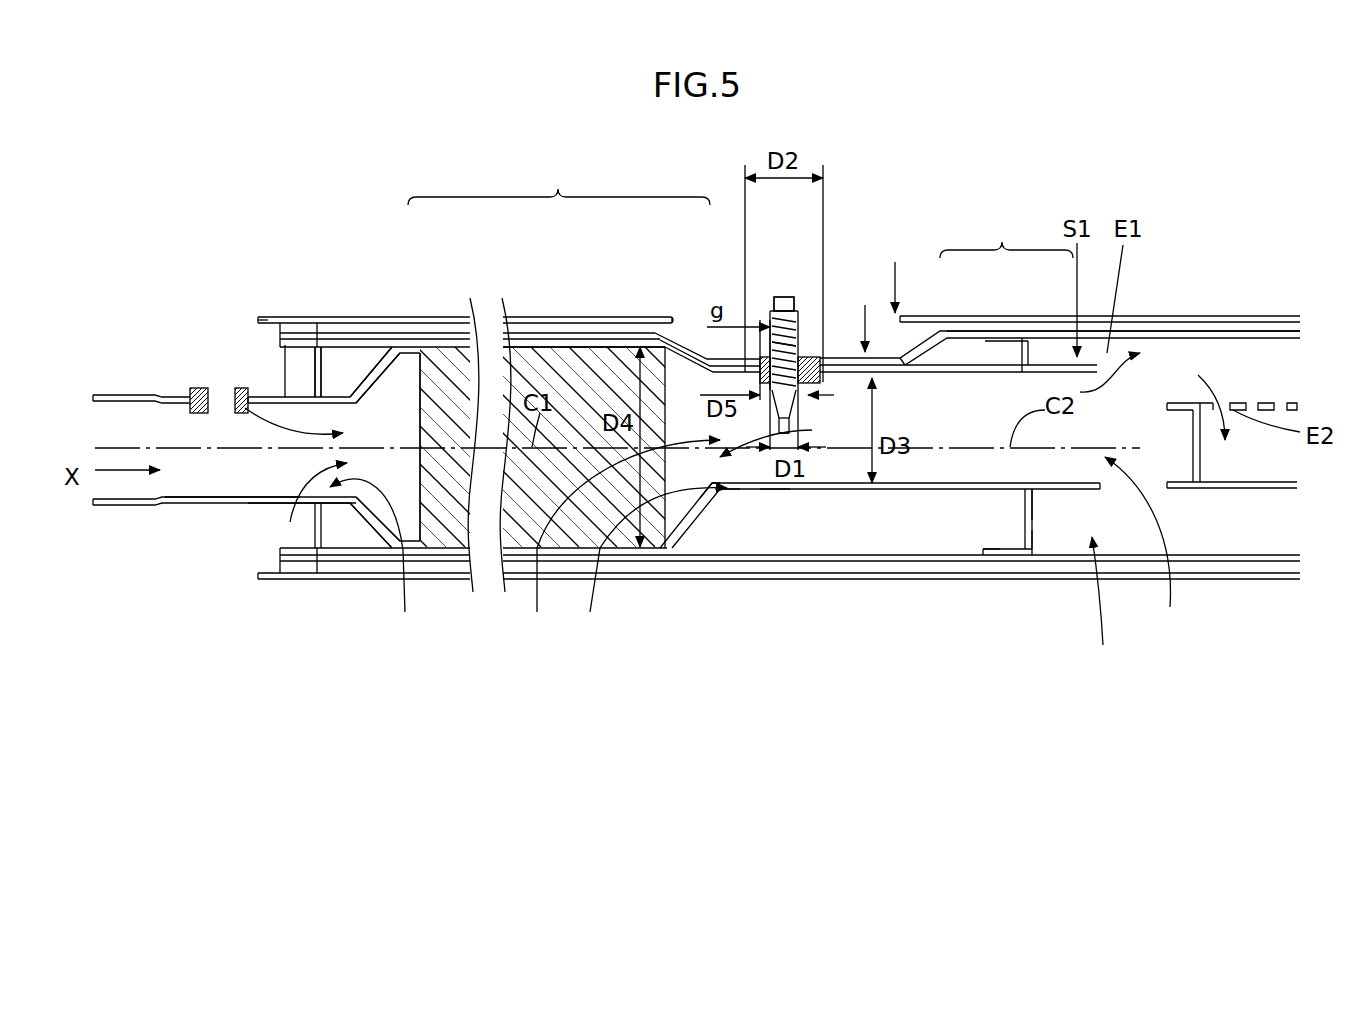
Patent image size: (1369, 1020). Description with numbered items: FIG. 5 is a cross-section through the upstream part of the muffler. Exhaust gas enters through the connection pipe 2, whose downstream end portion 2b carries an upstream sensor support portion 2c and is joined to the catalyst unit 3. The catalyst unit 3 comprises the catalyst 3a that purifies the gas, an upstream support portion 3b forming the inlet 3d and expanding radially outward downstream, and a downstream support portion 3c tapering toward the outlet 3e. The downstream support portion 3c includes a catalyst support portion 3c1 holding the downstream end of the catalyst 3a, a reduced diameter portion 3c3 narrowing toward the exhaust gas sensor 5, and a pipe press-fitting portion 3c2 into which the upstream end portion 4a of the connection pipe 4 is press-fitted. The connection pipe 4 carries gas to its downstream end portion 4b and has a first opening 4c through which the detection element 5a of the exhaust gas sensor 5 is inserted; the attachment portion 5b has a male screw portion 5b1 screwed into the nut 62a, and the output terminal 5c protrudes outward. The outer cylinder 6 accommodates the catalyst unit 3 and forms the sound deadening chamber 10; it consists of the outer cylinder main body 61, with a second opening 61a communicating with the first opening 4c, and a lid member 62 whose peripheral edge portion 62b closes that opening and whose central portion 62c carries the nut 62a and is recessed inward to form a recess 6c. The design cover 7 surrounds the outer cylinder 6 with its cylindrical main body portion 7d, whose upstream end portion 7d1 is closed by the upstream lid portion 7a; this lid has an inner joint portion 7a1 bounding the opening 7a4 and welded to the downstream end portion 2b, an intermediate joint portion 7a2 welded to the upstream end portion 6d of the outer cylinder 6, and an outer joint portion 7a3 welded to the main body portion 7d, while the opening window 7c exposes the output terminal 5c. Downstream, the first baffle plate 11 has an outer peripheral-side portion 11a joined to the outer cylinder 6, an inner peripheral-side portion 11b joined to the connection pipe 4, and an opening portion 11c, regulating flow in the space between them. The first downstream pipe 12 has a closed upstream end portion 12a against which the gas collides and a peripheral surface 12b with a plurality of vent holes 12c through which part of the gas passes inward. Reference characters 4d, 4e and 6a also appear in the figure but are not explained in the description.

The connection pipe 2 is at (193, 503).
The downstream end portion 2b is at (252, 503).
The upstream sensor support portion 2c is at (196, 387).
The catalyst unit 3 is at (545, 354).
The catalyst 3a is at (527, 350).
The upstream support portion 3b is at (412, 350).
The downstream support portion 3c is at (693, 350).
The catalyst support portion 3c1 is at (688, 525).
The pipe press-fitting portion 3c2 is at (722, 493).
The reduced diameter portion 3c3 is at (712, 505).
The inlet 3d is at (311, 507).
The outlet 3e is at (773, 495).
The connection pipe 4 is at (910, 490).
The upstream end portion 4a is at (650, 564).
The downstream end portion 4b is at (1103, 487).
The first opening 4c is at (810, 355).
The flow path 4d is at (620, 540).
The outlet flow 4e is at (1144, 548).
The exhaust gas sensor 5 is at (765, 313).
The detection element 5a is at (803, 433).
The attachment portion 5b is at (798, 350).
The male screw portion 5b1 is at (787, 340).
The output terminal 5c is at (772, 297).
The outer cylinder 6 is at (1006, 237).
The seal ring 6a is at (243, 387).
The recess 6c is at (869, 317).
The upstream end portion 6d is at (290, 363).
The design cover 7 is at (1107, 333).
The upstream lid portion 7a is at (330, 385).
The inner joint portion 7a1 is at (367, 360).
The intermediate joint portion 7a2 is at (294, 372).
The outer joint portion 7a3 is at (260, 328).
The opening 7a4 is at (378, 560).
The opening window 7c is at (892, 279).
The main body portion 7d is at (347, 318).
The upstream end portion 7d1 is at (265, 320).
The sound deadening chamber 10 is at (1104, 606).
The first baffle plate 11 is at (1037, 557).
The outer peripheral-side portion 11a is at (1002, 557).
The inner peripheral-side portion 11b is at (1037, 490).
The opening portion 11c is at (1033, 533).
The first downstream pipe 12 is at (1243, 490).
The closed upstream end portion 12a is at (1193, 440).
The peripheral surface 12b is at (1268, 398).
The vent holes 12c is at (1255, 398).
The outer cylinder main body 61 is at (1047, 333).
The second opening 61a is at (947, 375).
The lid member 62 is at (925, 333).
The nut 62a is at (812, 377).
The peripheral edge portion 62b is at (673, 330).
The central portion 62c is at (893, 373).